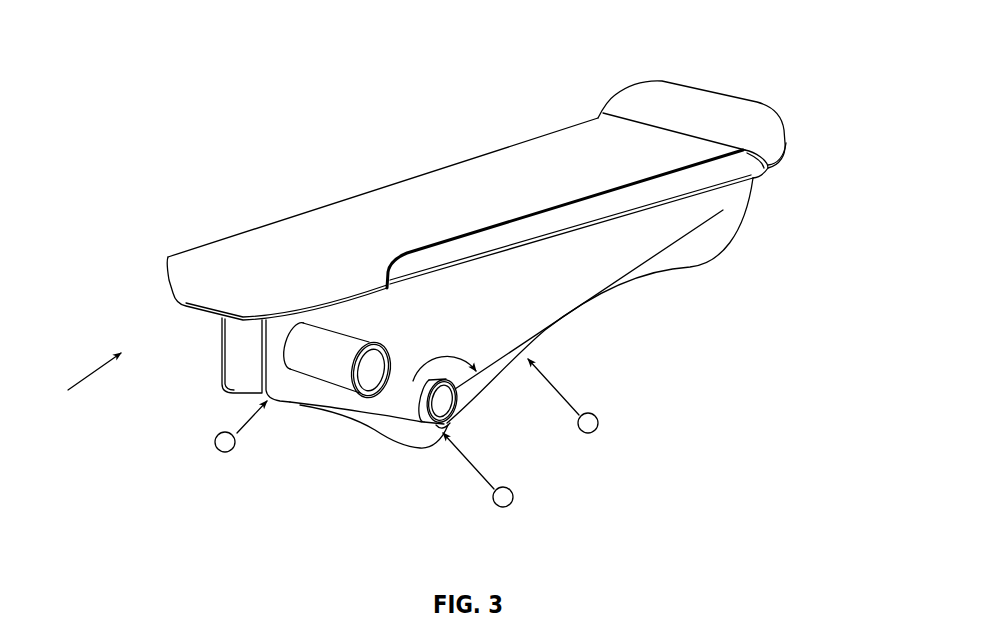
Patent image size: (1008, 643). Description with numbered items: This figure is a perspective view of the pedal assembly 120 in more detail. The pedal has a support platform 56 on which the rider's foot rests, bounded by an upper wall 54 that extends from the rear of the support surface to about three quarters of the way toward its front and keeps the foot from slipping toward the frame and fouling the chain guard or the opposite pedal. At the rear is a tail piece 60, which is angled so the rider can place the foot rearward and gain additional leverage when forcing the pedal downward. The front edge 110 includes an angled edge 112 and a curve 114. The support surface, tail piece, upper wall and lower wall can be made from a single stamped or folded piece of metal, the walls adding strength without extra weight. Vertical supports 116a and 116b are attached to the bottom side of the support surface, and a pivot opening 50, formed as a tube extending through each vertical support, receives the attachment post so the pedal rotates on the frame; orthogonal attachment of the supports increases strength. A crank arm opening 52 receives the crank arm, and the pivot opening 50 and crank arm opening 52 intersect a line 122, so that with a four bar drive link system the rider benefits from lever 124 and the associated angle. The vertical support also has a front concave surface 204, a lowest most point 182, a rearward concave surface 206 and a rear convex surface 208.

The pedal assembly 120 is at (231, 79).
The angled edge 112 is at (167, 273).
The support platform 56 is at (547, 145).
The upper wall 54 is at (733, 170).
The tail piece 60 is at (717, 103).
The curve 114 is at (232, 318).
The vertical support 116a is at (233, 375).
The pivot opening 50 is at (318, 375).
The crank arm opening 52 is at (435, 410).
The lowest most point 182 is at (438, 433).
The front concave surface 204 is at (390, 436).
The strut 206 is at (552, 328).
The lever 124 is at (673, 243).
The vertical support 116b is at (617, 268).
The rear convex surface 208 is at (737, 220).
The line 122 is at (411, 380).
The front edge 110 is at (93, 372).